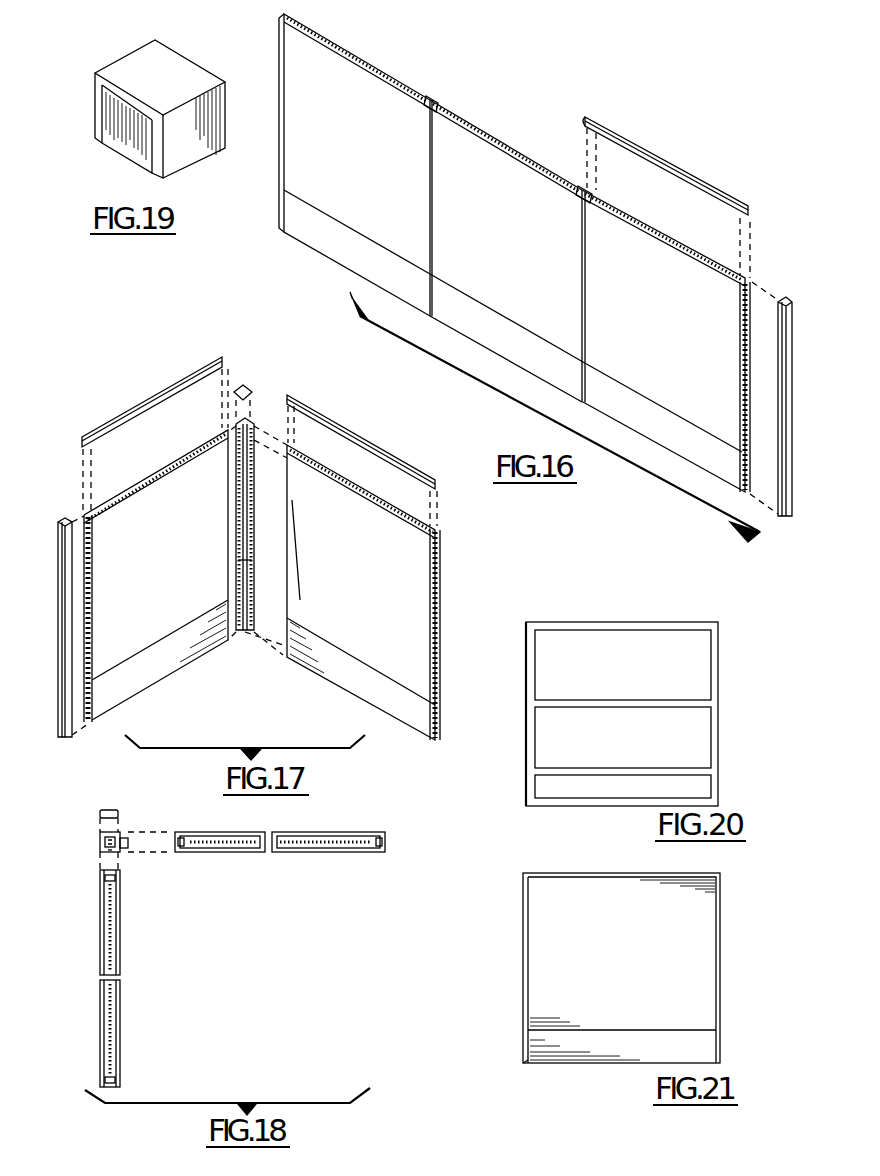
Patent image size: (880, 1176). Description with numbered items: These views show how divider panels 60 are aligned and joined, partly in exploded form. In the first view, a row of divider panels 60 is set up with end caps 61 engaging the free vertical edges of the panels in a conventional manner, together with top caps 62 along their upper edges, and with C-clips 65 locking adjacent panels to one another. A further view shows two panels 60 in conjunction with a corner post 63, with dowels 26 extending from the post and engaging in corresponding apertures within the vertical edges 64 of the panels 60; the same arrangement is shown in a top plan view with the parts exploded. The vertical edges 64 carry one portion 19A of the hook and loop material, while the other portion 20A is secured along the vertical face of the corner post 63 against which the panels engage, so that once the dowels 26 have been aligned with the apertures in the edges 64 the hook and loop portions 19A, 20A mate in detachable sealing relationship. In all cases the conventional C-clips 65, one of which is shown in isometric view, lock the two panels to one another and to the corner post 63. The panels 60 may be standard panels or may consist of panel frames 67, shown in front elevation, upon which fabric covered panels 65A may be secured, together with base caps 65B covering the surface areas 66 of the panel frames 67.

In FIG. 16, the divider panels 60 is at (362, 90).
In FIG. 17, the divider panels 60 is at (173, 472).
In FIG. 18, the divider panels 60 is at (120, 957).
In FIG. 16, the end caps 61 is at (785, 298).
In FIG. 17, the end caps 61 is at (73, 734).
In FIG. 18, the end caps 61 is at (120, 812).
In FIG. 16, the top caps 62 is at (712, 200).
In FIG. 17, the top caps 62 is at (190, 372).
In FIG. 17, the corner post 63 is at (254, 548).
In FIG. 18, the corner post 63 is at (100, 838).
In FIG. 17, the vertical edges 64 is at (284, 548).
In FIG. 21, the vertical edges 64 is at (623, 882).
In FIG. 16, the C-clips 65 is at (437, 102).
In FIG. 19, the C-clips 65 is at (198, 74).
In FIG. 20, the fabric covered panels 65A is at (705, 652).
In FIG. 21, the base caps 65B is at (540, 1068).
In FIG. 20, the surface areas 66 is at (575, 785).
In FIG. 20, the panel frames 67 is at (597, 623).
In FIG. 16, the one portion of the hook and loop material 19A is at (740, 288).
In FIG. 17, the one portion of the hook and loop material 19A is at (92, 522).
In FIG. 18, the one portion of the hook and loop material 19A is at (173, 852).
In FIG. 17, the other portion of the hook and loop material 20A is at (243, 564).
In FIG. 18, the other portion of the hook and loop material 20A is at (109, 851).
In FIG. 17, the dowels 26 is at (252, 442).
In FIG. 18, the dowels 26 is at (127, 846).